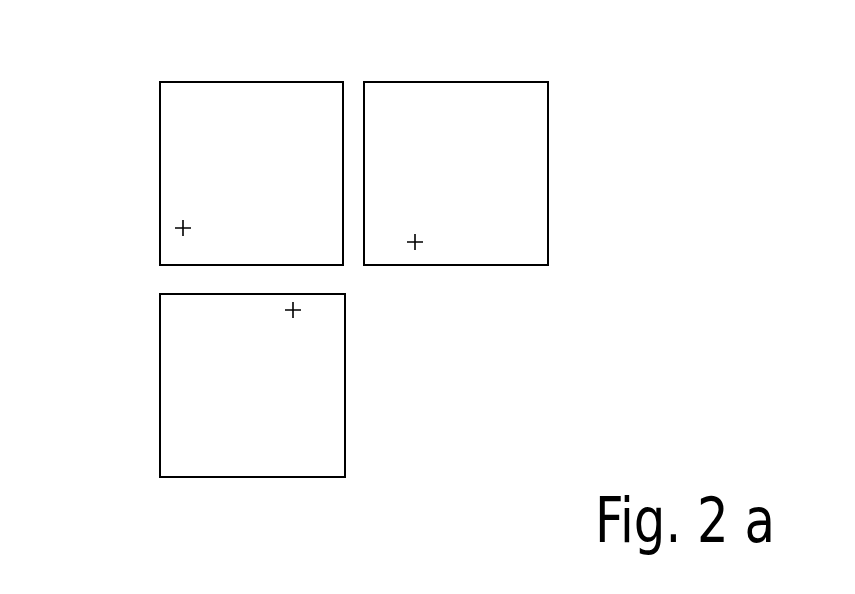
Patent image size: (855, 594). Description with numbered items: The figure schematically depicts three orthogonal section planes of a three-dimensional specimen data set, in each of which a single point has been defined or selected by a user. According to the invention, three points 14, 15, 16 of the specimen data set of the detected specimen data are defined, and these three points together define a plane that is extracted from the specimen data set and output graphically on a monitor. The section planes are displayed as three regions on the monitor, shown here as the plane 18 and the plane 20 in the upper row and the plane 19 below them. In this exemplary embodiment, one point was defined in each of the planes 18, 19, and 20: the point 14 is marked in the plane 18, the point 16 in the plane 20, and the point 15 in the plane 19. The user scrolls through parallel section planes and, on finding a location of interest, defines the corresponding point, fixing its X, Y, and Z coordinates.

The point 14 is at (178, 227).
The point 15 is at (298, 310).
The point 16 is at (421, 242).
The plane 18 is at (242, 125).
The plane 19 is at (216, 433).
The plane 20 is at (493, 133).